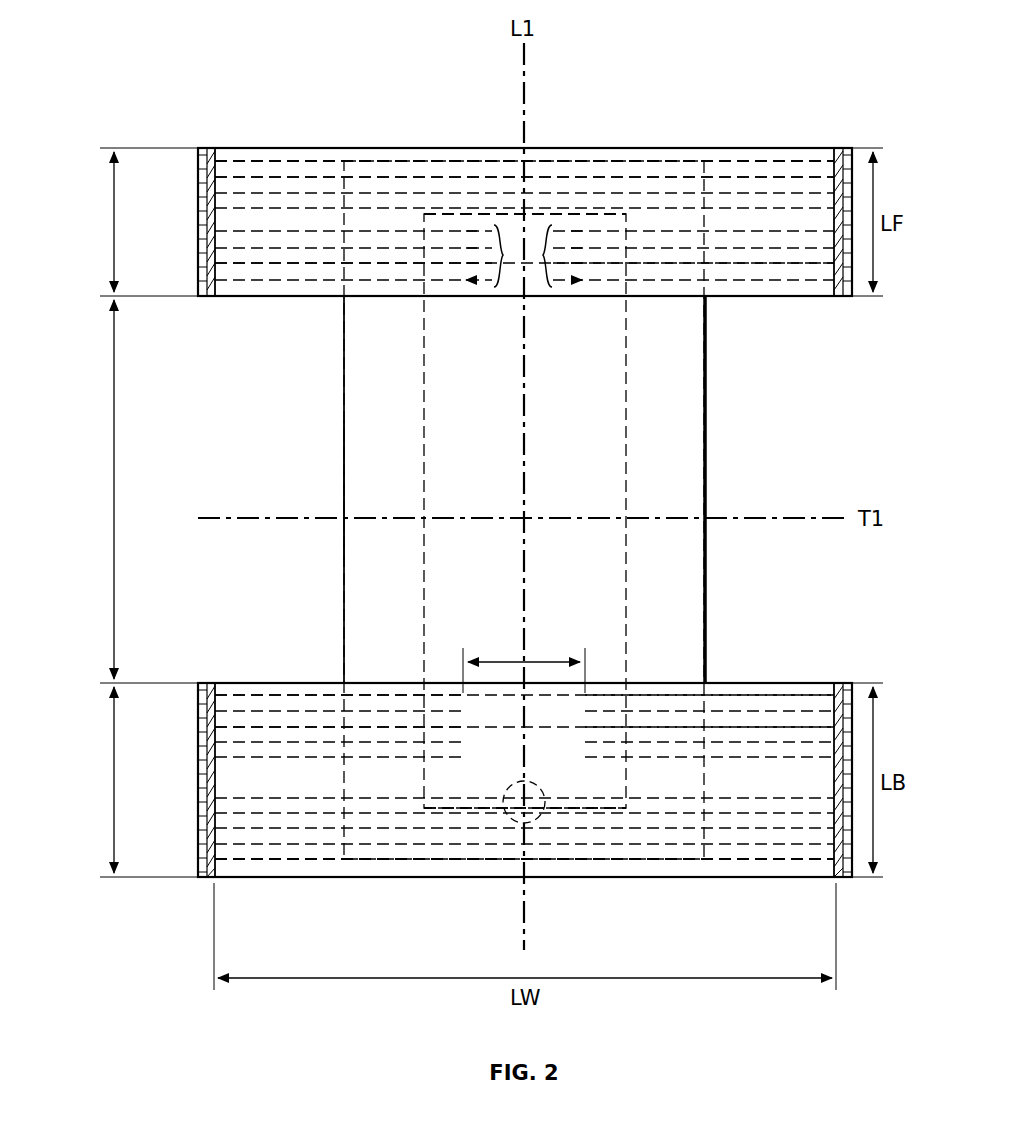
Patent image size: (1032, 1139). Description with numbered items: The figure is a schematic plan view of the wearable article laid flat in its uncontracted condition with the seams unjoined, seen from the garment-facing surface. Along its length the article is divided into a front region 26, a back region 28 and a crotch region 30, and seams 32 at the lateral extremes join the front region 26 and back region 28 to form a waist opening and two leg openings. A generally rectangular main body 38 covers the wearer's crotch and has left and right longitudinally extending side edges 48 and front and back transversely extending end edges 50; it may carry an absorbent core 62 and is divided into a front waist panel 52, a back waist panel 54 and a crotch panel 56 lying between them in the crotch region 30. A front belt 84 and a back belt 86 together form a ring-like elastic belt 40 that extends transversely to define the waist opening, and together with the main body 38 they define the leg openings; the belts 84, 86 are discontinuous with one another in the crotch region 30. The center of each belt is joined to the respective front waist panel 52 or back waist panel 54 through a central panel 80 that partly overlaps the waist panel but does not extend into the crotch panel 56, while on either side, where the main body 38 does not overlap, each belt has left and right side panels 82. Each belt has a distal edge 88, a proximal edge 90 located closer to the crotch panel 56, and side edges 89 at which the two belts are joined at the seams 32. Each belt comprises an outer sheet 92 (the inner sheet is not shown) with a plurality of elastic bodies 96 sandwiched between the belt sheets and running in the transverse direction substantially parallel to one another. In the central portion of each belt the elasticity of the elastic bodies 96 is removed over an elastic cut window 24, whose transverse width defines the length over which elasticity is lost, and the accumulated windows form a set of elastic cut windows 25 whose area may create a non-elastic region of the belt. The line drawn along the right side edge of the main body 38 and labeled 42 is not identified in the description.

The elastic cut window 24 is at (504, 656).
The set of elastic cut windows 25 is at (524, 256).
The front region 26 is at (114, 222).
The back region 28 is at (114, 790).
The crotch region 30 is at (114, 488).
The seams 32 is at (209, 144).
The main body 38 is at (710, 473).
The ring-like elastic belt 40 is at (658, 80).
The longitudinal side edge 42 is at (697, 575).
The longitudinally extending side edges 48 is at (343, 420).
The transversely extending end edges 50 is at (388, 158).
The front waist panel 52 is at (402, 222).
The back waist panel 54 is at (512, 741).
The crotch panel 56 is at (340, 490).
The absorbent core 62 is at (423, 447).
The central panel 80 is at (467, 180).
The side panel 82 is at (260, 265).
The front belt 84 is at (787, 147).
The back belt 86 is at (300, 877).
The distal edge 88 is at (557, 148).
The side edges 89 is at (198, 220).
The proximal edge 90 is at (320, 297).
The outer sheet 92 is at (258, 156).
The elastic bodies 96 is at (228, 180).